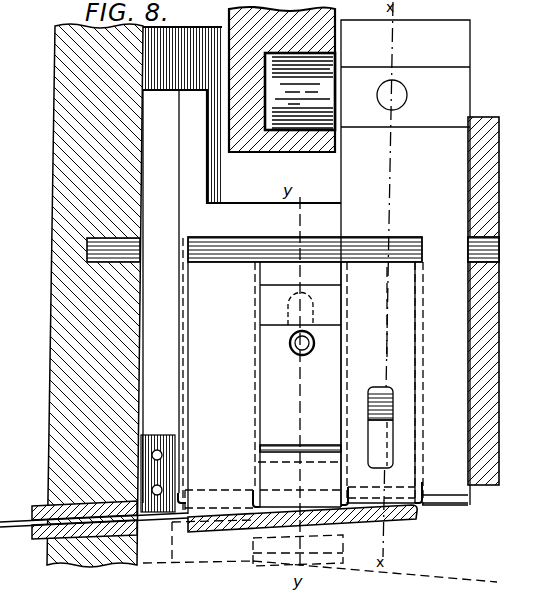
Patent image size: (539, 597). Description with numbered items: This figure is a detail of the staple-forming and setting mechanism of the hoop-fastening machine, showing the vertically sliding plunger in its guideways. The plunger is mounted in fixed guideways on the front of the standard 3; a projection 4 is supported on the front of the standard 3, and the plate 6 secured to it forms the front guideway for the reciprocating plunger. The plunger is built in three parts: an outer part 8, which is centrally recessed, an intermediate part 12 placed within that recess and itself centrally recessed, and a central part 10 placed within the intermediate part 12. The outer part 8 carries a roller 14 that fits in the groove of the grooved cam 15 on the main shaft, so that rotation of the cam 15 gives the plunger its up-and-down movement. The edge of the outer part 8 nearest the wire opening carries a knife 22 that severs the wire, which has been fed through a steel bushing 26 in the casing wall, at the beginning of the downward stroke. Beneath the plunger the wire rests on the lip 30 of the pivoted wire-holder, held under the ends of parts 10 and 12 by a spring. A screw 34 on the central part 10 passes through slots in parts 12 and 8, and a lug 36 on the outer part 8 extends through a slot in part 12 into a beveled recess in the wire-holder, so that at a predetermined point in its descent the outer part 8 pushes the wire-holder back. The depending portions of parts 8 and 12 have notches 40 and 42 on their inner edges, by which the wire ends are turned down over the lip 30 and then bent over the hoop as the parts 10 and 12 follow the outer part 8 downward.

The standard 3 is at (62, 415).
The projection 4 is at (217, 178).
The plate 6 is at (485, 117).
The outer part of the plunger 8 is at (425, 201).
The central part of the plunger 10 is at (299, 384).
The intermediate part of the plunger 12 is at (381, 382).
The roller 14 is at (313, 97).
The grooved cam 15 is at (310, 148).
The knife 22 is at (152, 435).
The steel bushing 26 is at (33, 506).
The lip 30 is at (400, 521).
The screw 34 is at (299, 350).
The lug 36 is at (387, 391).
The notch 40 is at (186, 494).
The notch 42 is at (256, 493).